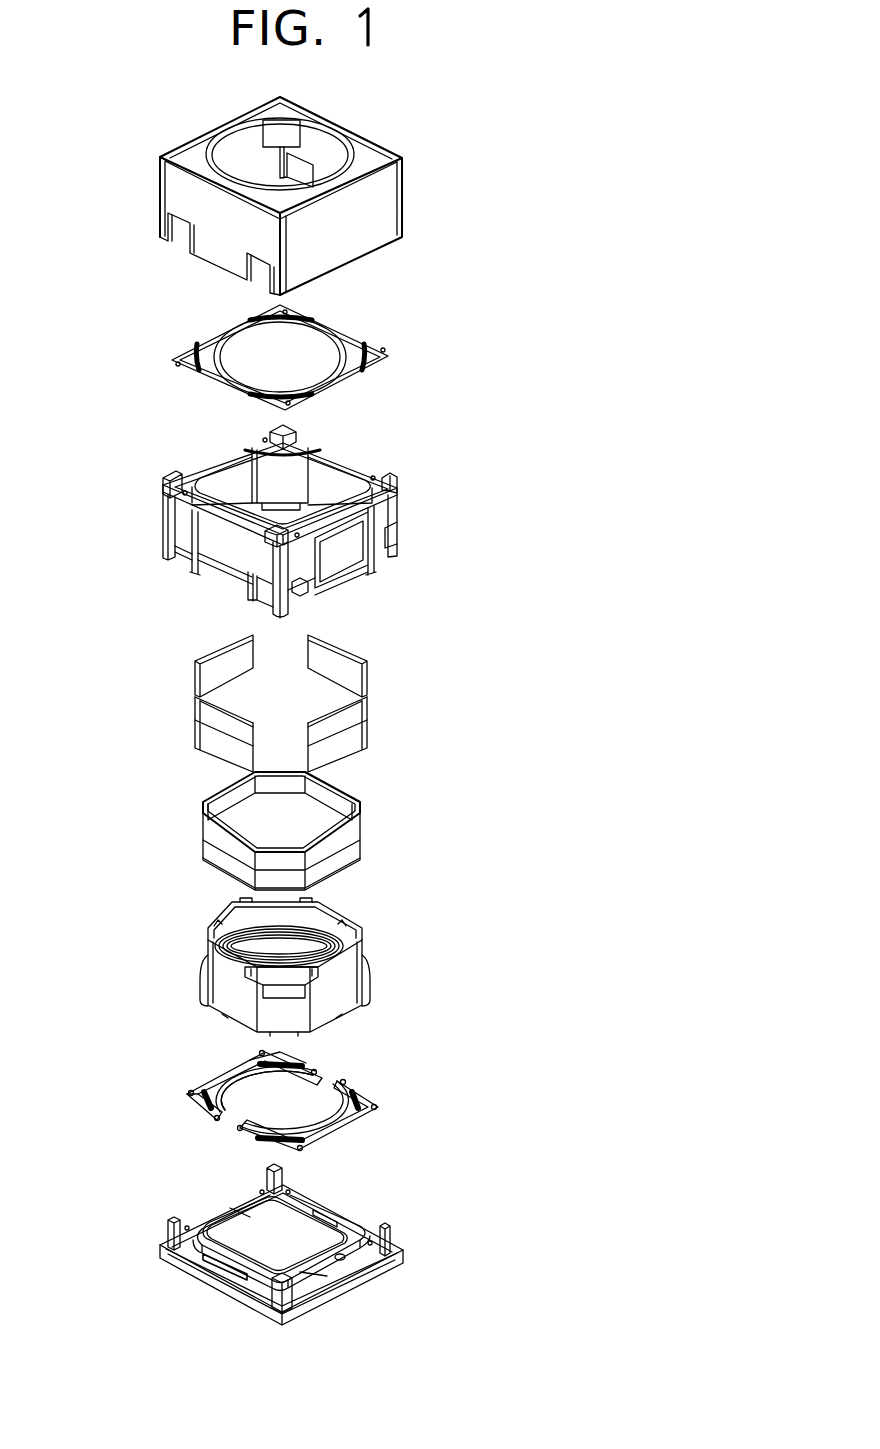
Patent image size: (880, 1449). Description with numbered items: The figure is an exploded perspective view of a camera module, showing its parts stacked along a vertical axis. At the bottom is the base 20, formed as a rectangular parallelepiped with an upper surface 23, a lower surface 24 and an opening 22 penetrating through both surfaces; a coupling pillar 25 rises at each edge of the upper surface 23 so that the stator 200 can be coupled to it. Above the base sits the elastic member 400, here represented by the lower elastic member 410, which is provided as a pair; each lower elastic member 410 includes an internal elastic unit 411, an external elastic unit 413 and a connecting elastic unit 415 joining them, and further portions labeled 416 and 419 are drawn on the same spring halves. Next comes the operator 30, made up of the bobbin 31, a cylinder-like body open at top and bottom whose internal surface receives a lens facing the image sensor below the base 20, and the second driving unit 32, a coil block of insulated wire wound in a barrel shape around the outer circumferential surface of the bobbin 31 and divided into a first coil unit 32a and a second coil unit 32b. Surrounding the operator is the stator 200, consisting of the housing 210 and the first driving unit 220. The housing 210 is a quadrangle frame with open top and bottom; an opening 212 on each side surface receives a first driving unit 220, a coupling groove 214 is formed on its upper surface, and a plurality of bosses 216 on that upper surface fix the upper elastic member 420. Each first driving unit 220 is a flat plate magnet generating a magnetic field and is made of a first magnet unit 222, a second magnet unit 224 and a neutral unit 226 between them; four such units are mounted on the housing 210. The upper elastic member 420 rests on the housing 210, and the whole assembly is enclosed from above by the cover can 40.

The cover can 40 is at (412, 192).
The upper elastic member 420 is at (400, 346).
The boss 216 is at (262, 438).
The housing 210 is at (342, 518).
The opening 212 is at (335, 553).
The coupling groove 214 is at (297, 598).
The stator 200 is at (339, 582).
The first driving unit 220 is at (305, 702).
The first magnet unit 222 is at (208, 712).
The neutral unit 226 is at (207, 725).
The second magnet unit 224 is at (205, 733).
The operator 30 is at (343, 904).
The second driving unit 32 is at (316, 831).
The first coil unit 32a is at (217, 842).
The second coil unit 32b is at (215, 862).
The bobbin 31 is at (347, 967).
The elastic member 400 is at (290, 1087).
The lower elastic member 410 is at (212, 1134).
The internal elastic unit 411 is at (238, 1077).
The external elastic unit 413 is at (185, 1098).
The connecting elastic unit 415 is at (207, 1069).
The terminal portion 416 is at (203, 1107).
The second lower elastic member 419 is at (362, 1131).
The base 20 is at (310, 1252).
The opening 22 is at (278, 1241).
The upper surface 23 is at (205, 1241).
The lower surface 24 is at (227, 1303).
The coupling pillar 25 is at (393, 1238).